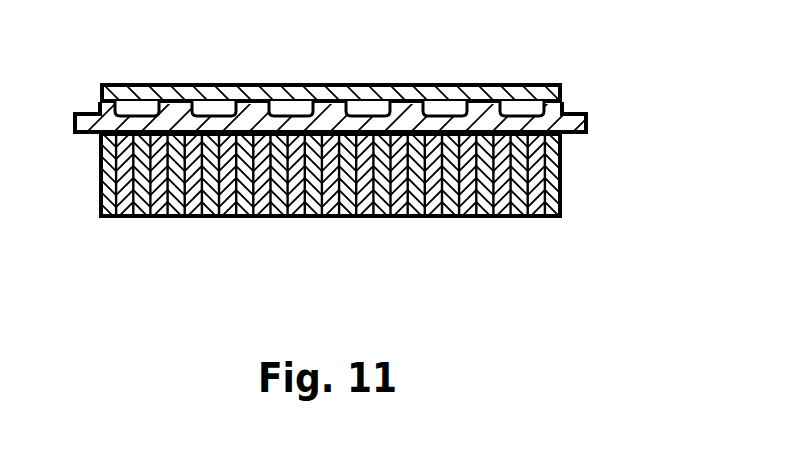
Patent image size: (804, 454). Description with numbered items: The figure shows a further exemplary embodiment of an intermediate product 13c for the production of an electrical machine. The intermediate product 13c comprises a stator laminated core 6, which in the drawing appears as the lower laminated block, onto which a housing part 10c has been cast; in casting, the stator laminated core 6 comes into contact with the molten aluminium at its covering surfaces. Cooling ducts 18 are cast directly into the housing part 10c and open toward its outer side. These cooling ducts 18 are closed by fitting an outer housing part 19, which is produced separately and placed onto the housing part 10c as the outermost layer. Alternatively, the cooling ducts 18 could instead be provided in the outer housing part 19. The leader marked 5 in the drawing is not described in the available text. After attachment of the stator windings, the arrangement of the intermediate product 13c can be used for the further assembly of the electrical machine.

The piezoelectric element 5 is at (193, 145).
The outer housing part 19 is at (325, 88).
The housing part 10c is at (402, 110).
The cooling ducts 18 is at (517, 107).
The intermediate product 13c is at (401, 125).
The stator laminated core 6 is at (100, 255).